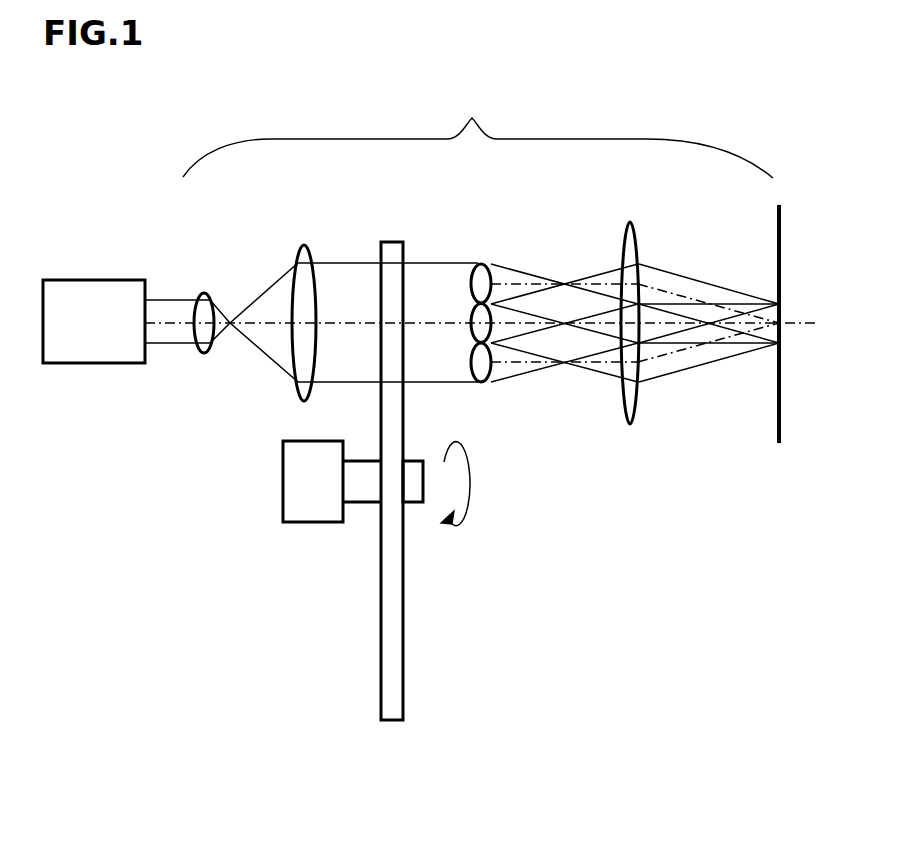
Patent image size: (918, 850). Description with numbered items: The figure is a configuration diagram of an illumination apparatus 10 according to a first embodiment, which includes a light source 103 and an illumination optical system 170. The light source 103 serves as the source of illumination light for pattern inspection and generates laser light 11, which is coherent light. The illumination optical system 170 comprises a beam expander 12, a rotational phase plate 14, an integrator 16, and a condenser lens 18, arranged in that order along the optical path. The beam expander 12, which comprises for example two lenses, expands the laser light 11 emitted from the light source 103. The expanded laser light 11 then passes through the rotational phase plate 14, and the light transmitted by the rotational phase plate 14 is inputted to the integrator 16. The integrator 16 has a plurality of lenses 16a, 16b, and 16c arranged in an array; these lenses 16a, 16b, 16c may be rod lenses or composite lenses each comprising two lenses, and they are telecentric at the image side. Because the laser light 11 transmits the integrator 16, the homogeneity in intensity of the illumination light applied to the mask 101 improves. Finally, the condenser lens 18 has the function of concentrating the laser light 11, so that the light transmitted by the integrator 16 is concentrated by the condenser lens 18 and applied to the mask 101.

The illumination apparatus 10 is at (714, 120).
The illumination optical system 170 is at (478, 133).
The light source 103 is at (83, 300).
The laser light 11 is at (165, 302).
The beam expander 12 is at (263, 268).
The rotational phase plate 14 is at (393, 252).
The integrator 16 is at (467, 284).
The lens 16a is at (472, 281).
The lens 16b is at (472, 308).
The lens 16c is at (472, 361).
The condenser lens 18 is at (632, 223).
The mask 101 is at (781, 227).